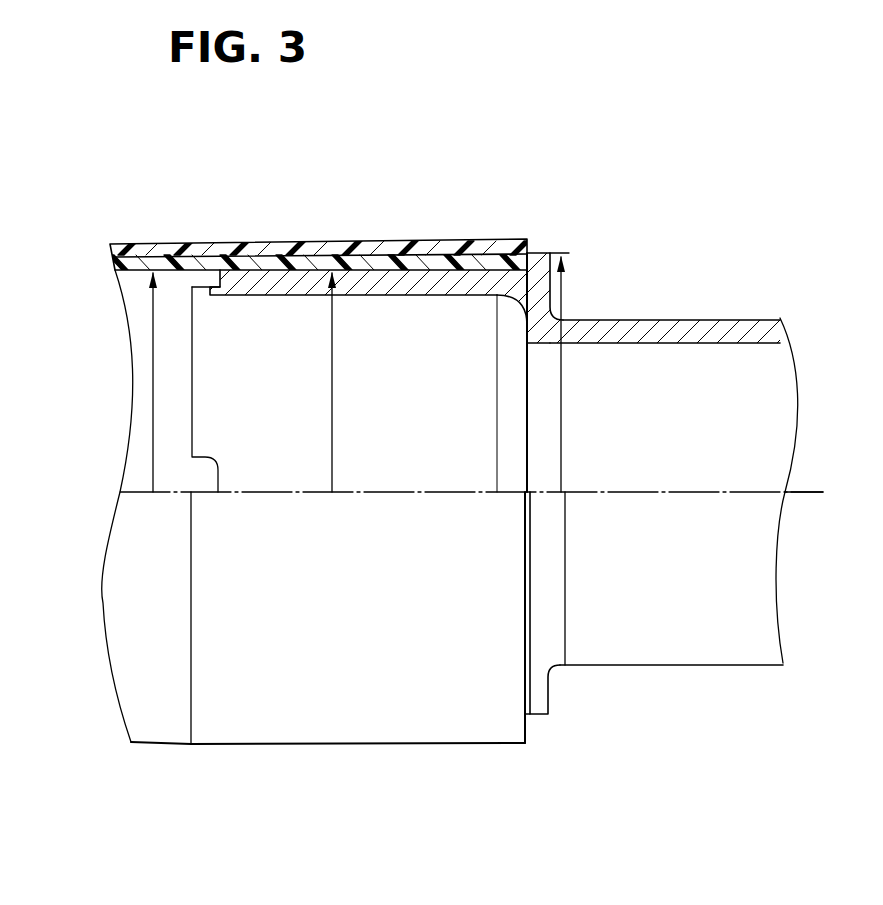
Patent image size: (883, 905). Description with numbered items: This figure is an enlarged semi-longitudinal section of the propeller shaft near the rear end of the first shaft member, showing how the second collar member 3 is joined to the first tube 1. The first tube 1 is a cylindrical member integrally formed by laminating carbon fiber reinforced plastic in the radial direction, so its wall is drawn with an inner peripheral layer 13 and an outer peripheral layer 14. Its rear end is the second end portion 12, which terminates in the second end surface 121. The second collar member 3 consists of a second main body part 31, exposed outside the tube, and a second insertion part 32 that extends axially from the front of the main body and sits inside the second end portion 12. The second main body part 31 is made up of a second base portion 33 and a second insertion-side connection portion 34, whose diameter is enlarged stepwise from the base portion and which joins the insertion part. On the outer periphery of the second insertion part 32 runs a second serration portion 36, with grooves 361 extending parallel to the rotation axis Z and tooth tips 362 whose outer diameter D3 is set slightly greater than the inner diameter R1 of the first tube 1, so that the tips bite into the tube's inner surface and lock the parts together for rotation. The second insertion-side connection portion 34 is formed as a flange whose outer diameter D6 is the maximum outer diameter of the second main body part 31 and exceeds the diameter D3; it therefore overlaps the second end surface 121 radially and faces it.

The first tube 1 is at (337, 750).
The second end portion 12 is at (428, 745).
The second end surface 121 is at (525, 726).
The second collar member 3 is at (674, 675).
The second main body part 31 is at (499, 229).
The second insertion part 32 is at (422, 285).
The second base portion 33 is at (625, 330).
The second insertion-side connection portion 34 is at (537, 265).
The second serration portion 36 is at (319, 185).
The groove 361 is at (394, 209).
The tooth tips 362 is at (352, 245).
The inner peripheral layer 13 is at (212, 250).
The outer peripheral layer 14 is at (260, 248).
The inner diameter of the first tube R1 is at (153, 433).
The outer diameter of tooth tips D3 is at (331, 453).
The outer diameter of second insertion-side connection portion D6 is at (561, 388).
The rotation axis Z is at (812, 490).